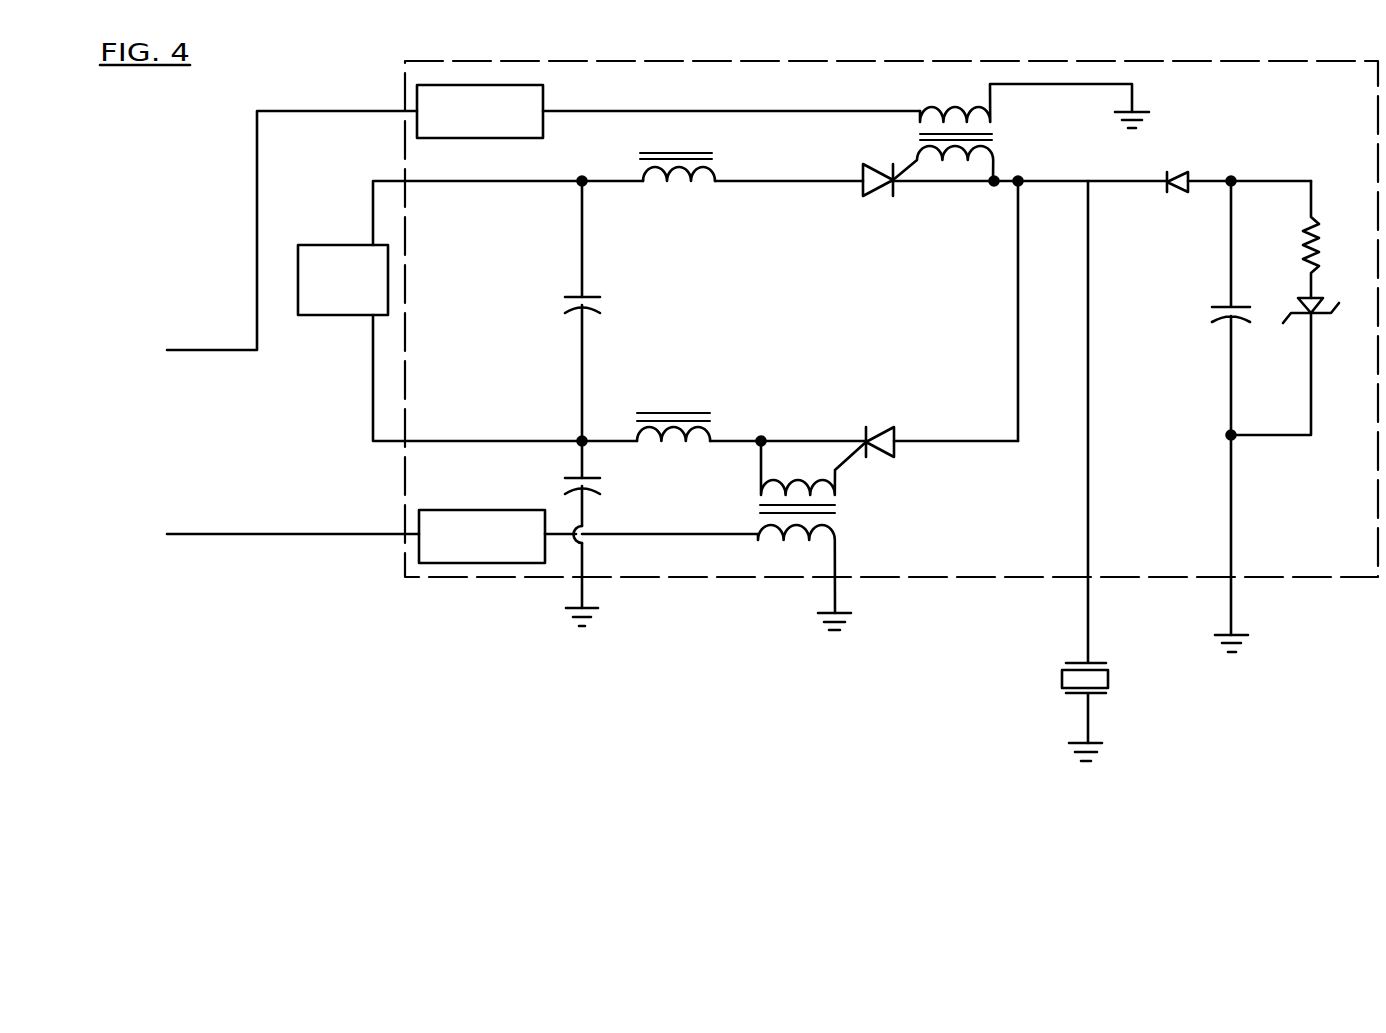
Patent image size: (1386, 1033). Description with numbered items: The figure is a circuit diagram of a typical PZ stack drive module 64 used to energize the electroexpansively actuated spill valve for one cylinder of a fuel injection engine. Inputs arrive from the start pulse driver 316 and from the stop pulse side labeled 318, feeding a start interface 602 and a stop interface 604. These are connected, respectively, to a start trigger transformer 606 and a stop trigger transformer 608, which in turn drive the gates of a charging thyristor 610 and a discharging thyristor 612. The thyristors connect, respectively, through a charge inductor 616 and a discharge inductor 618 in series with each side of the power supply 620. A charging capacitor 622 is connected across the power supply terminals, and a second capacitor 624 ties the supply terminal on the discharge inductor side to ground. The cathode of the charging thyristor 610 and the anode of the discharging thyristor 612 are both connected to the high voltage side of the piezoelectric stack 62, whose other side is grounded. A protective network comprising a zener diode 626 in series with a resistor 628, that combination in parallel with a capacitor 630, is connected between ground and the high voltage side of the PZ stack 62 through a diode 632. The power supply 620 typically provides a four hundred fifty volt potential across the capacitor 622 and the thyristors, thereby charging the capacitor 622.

The PZ stack drive module 64 is at (903, 62).
The piezoelectric stack 62 is at (1108, 676).
The start interface 602 is at (543, 97).
The stop interface 604 is at (507, 509).
The start trigger transformer 606 is at (915, 148).
The stop trigger transformer 608 is at (758, 509).
The charging thyristor 610 is at (861, 187).
The discharging thyristor 612 is at (865, 438).
The charge inductor 616 is at (718, 161).
The discharge inductor 618 is at (712, 427).
The power supply 620 is at (348, 316).
The charging capacitor 622 is at (570, 294).
The second capacitor 624 is at (574, 478).
The zener diode 626 is at (1314, 316).
The resistor 628 is at (1306, 230).
The capacitor 630 is at (1230, 305).
The diode 632 is at (1170, 188).
The start pulse driver 316 is at (241, 235).
The input from 318 is at (242, 534).